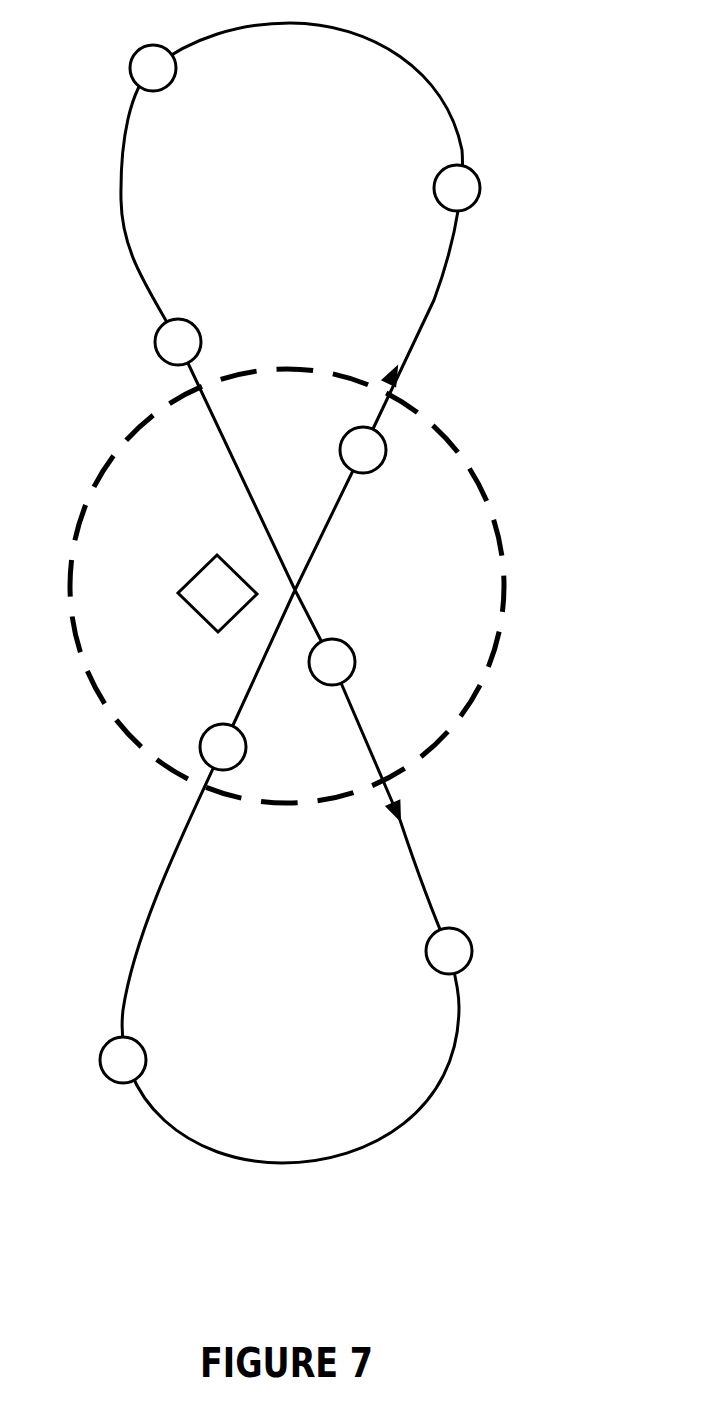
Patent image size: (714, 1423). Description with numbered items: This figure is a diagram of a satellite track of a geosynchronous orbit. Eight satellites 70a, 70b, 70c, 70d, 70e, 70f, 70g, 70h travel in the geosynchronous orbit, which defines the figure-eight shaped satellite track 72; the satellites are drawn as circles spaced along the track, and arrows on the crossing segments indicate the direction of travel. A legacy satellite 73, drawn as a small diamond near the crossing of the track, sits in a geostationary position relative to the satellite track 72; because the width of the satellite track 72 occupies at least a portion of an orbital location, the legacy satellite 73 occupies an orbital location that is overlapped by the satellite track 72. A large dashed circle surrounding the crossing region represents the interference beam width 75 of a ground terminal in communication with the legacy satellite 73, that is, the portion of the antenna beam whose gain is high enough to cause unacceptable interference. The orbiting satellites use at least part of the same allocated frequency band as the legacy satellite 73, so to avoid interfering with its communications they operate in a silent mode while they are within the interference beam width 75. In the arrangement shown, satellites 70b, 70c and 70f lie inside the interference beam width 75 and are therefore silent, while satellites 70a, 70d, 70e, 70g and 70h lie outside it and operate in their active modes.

The satellite track 72 is at (433, 78).
The interference beam width 75 is at (475, 478).
The legacy satellite 73 is at (197, 575).
The satellite 70a is at (477, 202).
The satellite 70b is at (372, 472).
The satellite 70c is at (207, 733).
The satellite 70d is at (103, 1065).
The satellite 70e is at (471, 946).
The satellite 70f is at (355, 657).
The satellite 70g is at (160, 360).
The satellite 70h is at (130, 63).